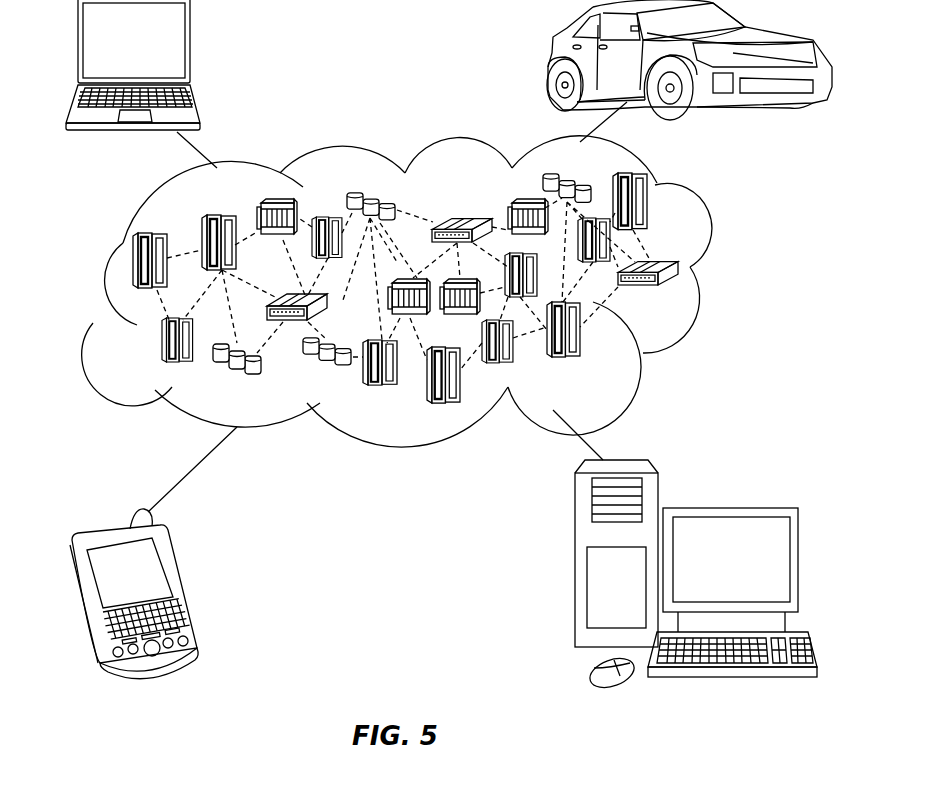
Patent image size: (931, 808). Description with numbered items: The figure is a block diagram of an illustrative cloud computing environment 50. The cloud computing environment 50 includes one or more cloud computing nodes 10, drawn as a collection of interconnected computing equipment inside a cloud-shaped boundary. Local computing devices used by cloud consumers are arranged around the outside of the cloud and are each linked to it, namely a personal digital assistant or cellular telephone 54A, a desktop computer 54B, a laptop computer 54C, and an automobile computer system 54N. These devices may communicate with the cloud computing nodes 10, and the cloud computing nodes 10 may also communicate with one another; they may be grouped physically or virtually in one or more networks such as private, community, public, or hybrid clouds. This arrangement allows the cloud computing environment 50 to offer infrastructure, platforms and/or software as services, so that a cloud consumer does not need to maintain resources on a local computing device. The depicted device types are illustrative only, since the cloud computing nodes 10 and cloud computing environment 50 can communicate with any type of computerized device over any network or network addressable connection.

The cloud computing node 10 is at (683, 295).
The cloud computing environment 50 is at (732, 272).
The personal digital assistant or cellular telephone 54A is at (183, 583).
The desktop computer 54B is at (728, 508).
The laptop computer 54C is at (190, 47).
The automobile computer system 54N is at (548, 58).